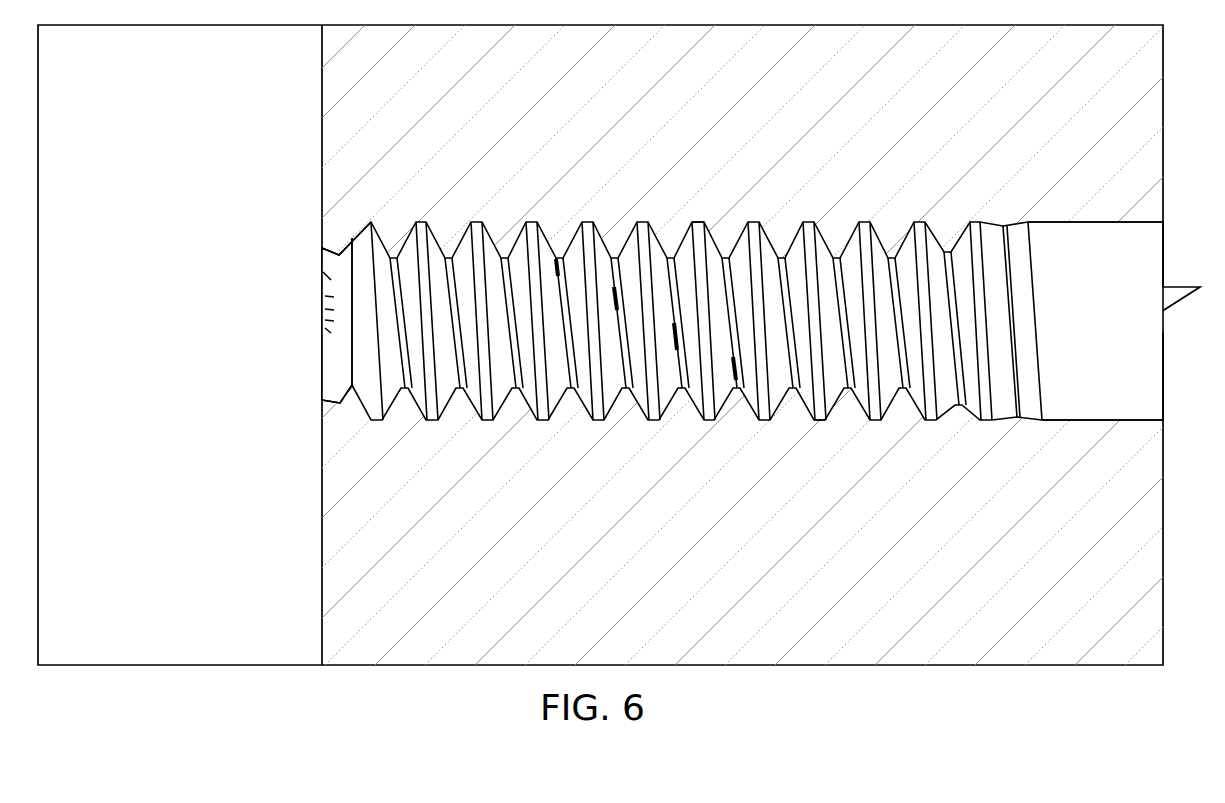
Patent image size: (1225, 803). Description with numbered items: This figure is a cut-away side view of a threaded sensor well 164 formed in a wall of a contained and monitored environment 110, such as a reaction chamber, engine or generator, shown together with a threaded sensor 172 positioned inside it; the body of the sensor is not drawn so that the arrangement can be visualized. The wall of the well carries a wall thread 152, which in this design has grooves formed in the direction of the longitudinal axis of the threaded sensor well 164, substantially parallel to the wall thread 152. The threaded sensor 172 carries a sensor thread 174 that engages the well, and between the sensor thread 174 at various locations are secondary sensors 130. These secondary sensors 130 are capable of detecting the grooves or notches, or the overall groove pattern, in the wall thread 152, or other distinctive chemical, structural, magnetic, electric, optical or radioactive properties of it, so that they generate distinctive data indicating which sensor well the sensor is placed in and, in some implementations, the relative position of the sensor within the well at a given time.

The contained and monitored environment 110 is at (198, 357).
The secondary sensors 130 is at (614, 257).
The wall thread 152 is at (386, 230).
The threaded sensor well 164 is at (522, 200).
The threaded sensor 172 is at (1060, 228).
The sensor thread 174 is at (695, 222).